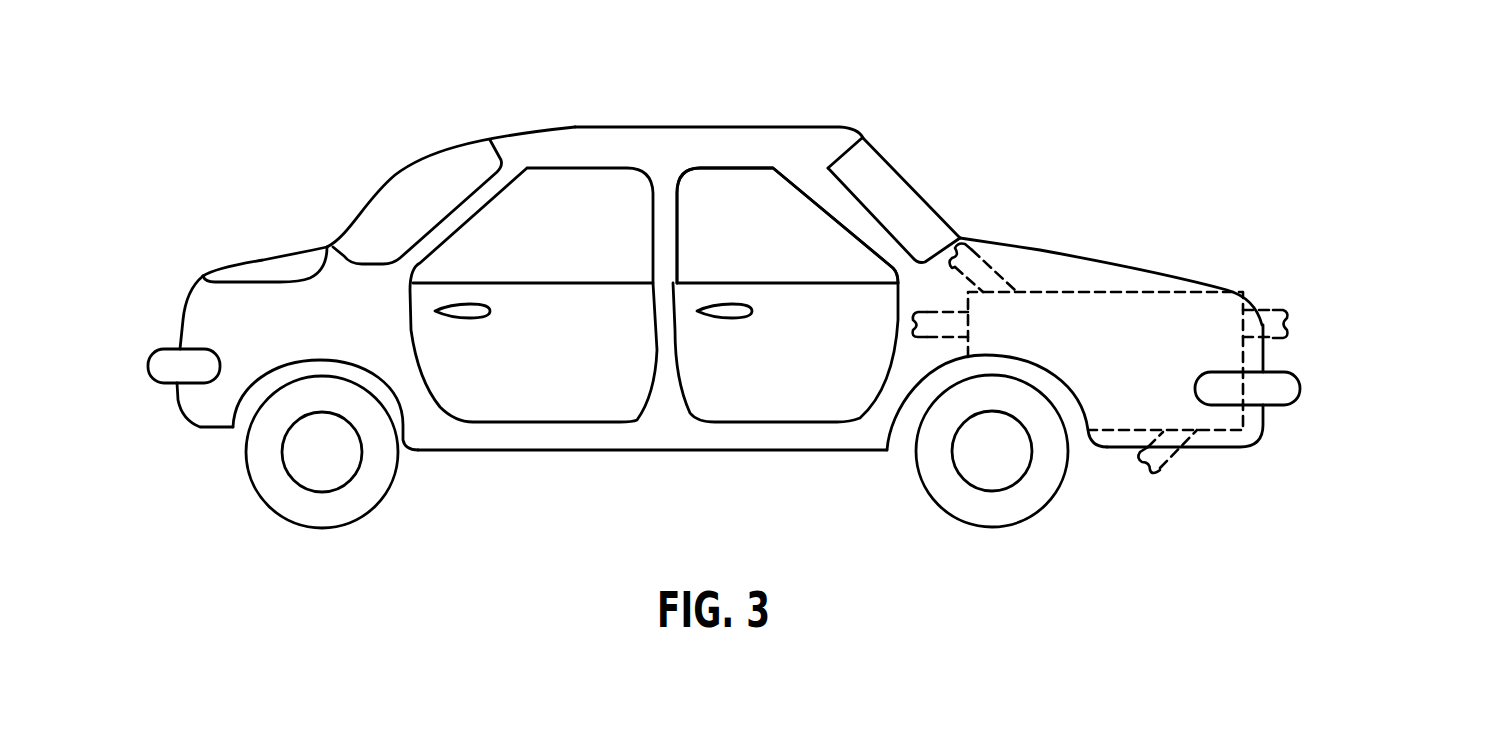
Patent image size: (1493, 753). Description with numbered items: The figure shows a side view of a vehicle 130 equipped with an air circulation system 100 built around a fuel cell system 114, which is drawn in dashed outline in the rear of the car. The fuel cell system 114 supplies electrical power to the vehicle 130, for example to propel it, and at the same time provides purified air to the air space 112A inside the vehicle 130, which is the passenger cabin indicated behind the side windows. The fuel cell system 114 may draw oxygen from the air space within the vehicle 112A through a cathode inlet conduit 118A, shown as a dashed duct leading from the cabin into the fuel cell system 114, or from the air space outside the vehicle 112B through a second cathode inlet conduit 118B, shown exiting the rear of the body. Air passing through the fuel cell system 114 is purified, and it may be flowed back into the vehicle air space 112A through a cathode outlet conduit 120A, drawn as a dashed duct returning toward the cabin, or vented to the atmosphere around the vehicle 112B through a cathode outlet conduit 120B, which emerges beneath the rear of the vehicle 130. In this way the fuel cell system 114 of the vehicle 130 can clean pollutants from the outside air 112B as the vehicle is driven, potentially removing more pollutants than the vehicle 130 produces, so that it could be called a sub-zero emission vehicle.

The air circulation system 100 is at (352, 81).
The vehicle 130 is at (576, 126).
The air space within the vehicle 112A is at (723, 211).
The air space outside the vehicle 112B is at (1487, 394).
The fuel cell system 114 is at (1150, 326).
The cathode inlet conduit 118A is at (983, 261).
The cathode inlet conduit 118B is at (1290, 311).
The cathode outlet conduit 120A is at (920, 313).
The cathode outlet conduit 120B is at (1155, 468).